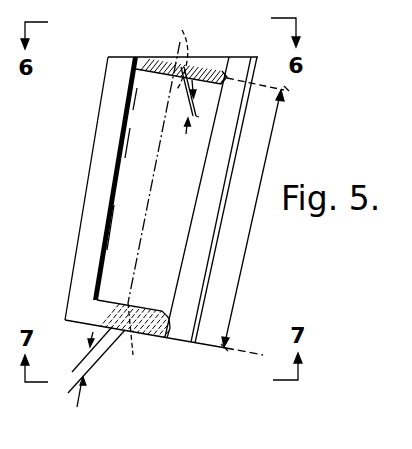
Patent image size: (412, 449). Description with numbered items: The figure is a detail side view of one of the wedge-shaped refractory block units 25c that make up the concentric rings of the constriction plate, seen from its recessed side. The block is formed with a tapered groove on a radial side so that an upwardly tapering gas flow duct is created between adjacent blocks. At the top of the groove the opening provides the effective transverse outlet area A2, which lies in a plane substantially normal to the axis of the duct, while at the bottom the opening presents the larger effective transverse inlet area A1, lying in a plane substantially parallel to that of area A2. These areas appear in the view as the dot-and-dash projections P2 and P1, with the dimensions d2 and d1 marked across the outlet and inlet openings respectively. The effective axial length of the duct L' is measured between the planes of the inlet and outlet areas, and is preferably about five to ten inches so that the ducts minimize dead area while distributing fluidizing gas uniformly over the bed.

The tubular member 25c is at (76, 186).
The projection of the effective transverse outlet area P2 is at (167, 67).
The projection of the effective transverse inlet area P1 is at (147, 333).
The effective transverse outlet area A2 is at (186, 50).
The effective transverse inlet area A1 is at (128, 342).
The upper aperture diameter d2 is at (199, 117).
The lower aperture diameter d1 is at (83, 368).
The effective axial length of the duct L' is at (255, 218).